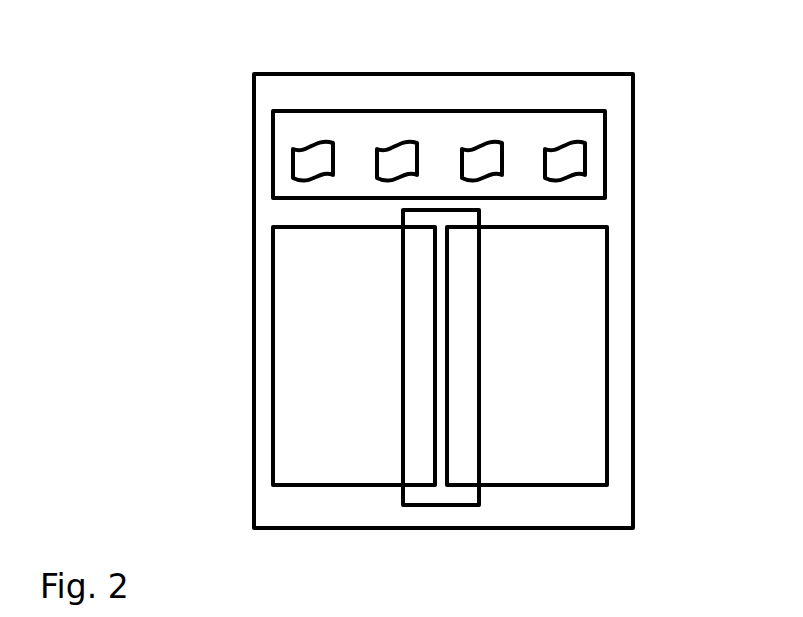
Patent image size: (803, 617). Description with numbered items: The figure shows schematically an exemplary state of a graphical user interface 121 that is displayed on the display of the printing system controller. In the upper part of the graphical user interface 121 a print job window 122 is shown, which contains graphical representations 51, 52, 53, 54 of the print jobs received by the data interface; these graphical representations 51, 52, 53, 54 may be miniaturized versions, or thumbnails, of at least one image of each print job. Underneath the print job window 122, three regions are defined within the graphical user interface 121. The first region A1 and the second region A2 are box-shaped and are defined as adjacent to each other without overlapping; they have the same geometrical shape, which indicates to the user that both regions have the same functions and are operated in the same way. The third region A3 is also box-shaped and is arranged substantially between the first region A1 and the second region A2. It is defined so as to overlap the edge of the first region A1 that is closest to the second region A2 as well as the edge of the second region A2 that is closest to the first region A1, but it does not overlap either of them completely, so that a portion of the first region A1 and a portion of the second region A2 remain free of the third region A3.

The graphical user interface 121 is at (633, 118).
The print job window 122 is at (605, 167).
The graphical representation 54 is at (315, 143).
The graphical representation 53 is at (395, 143).
The graphical representation 52 is at (479, 143).
The graphical representation 51 is at (563, 143).
The first region A1 is at (273, 340).
The second region A2 is at (607, 333).
The third region A3 is at (435, 505).